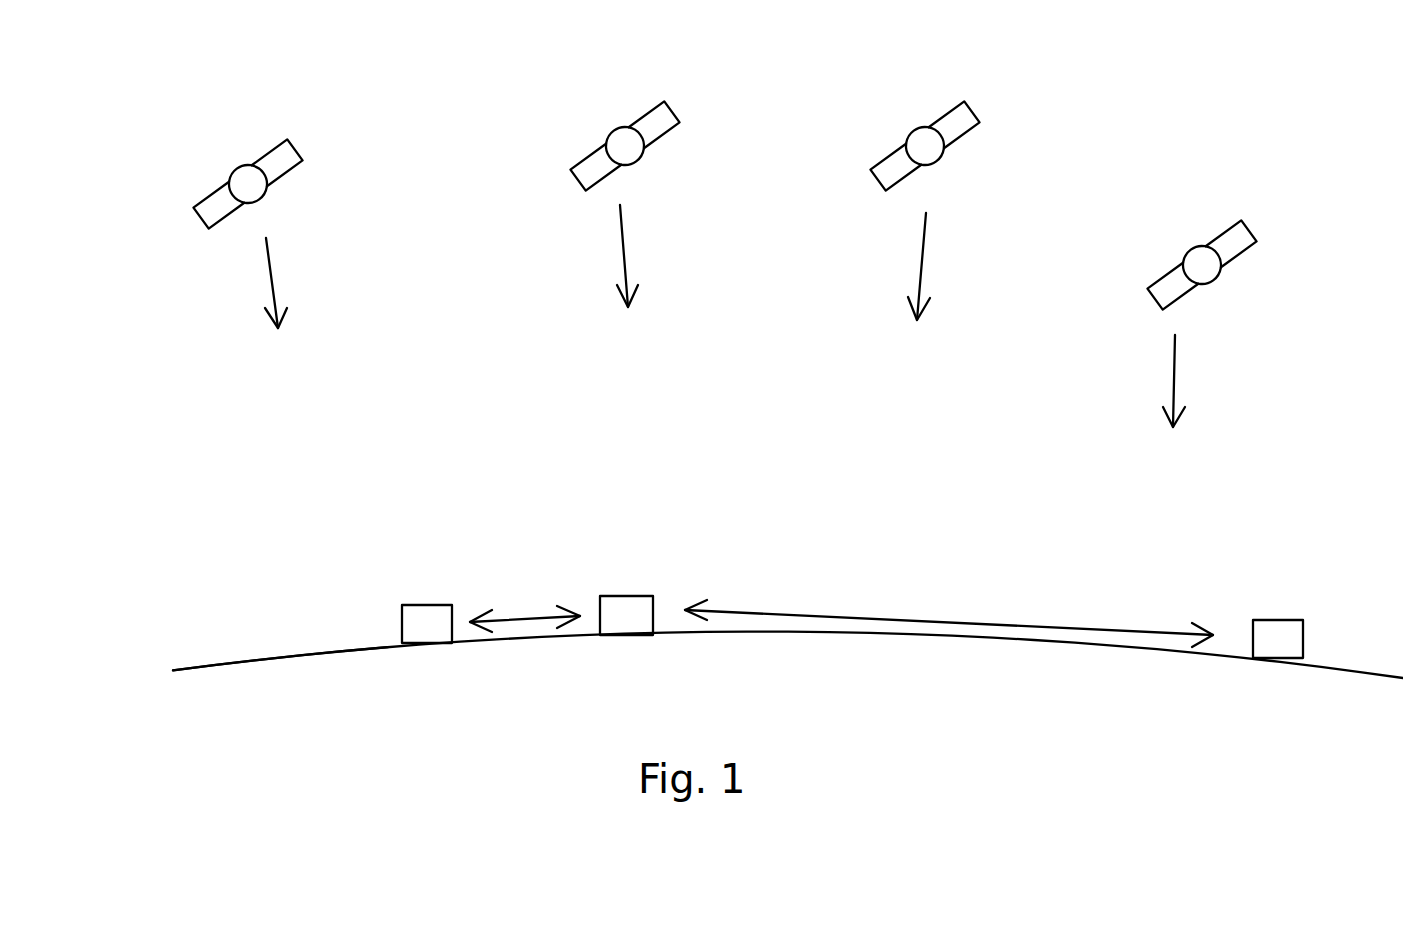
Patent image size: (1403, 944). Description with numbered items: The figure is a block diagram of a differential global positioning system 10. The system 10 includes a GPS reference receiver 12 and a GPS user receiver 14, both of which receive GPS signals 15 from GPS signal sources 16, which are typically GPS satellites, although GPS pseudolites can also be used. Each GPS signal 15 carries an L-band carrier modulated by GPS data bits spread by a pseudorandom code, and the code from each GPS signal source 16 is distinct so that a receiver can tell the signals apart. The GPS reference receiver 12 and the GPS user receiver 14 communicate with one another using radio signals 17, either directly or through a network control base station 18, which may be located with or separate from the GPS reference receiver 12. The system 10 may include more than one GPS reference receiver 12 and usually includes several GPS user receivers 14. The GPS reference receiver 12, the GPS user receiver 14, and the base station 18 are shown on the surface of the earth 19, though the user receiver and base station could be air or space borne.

The differential global positioning system 10 is at (1008, 672).
The GPS reference receiver 12 is at (415, 605).
The GPS user receiver 14 is at (1303, 620).
The GPS signals 15 is at (275, 273).
The GPS signal sources 16 is at (242, 170).
The radio signals 17 is at (520, 618).
The network control base station 18 is at (623, 596).
The surface of the earth 19 is at (303, 653).